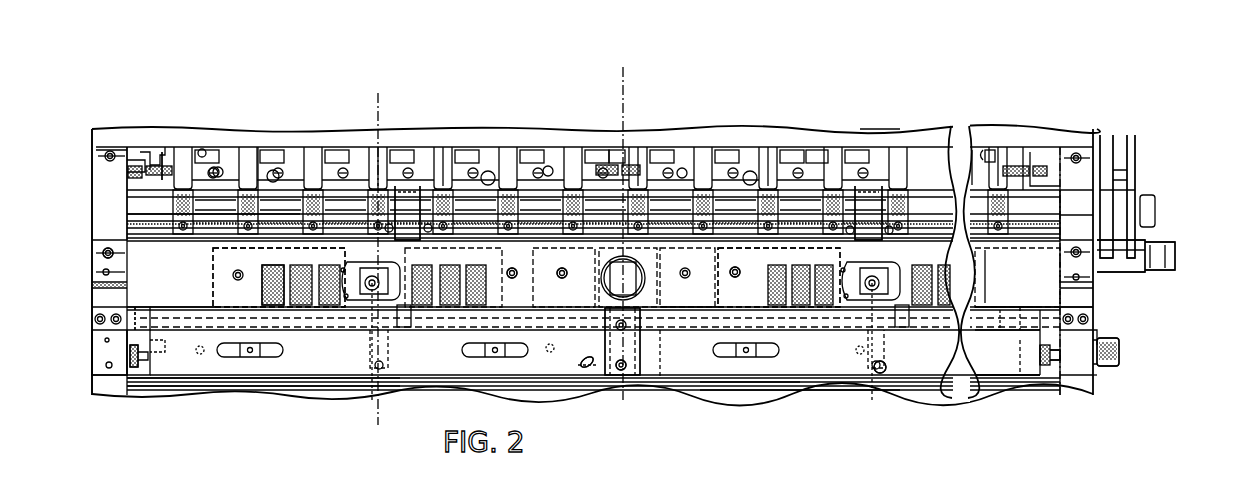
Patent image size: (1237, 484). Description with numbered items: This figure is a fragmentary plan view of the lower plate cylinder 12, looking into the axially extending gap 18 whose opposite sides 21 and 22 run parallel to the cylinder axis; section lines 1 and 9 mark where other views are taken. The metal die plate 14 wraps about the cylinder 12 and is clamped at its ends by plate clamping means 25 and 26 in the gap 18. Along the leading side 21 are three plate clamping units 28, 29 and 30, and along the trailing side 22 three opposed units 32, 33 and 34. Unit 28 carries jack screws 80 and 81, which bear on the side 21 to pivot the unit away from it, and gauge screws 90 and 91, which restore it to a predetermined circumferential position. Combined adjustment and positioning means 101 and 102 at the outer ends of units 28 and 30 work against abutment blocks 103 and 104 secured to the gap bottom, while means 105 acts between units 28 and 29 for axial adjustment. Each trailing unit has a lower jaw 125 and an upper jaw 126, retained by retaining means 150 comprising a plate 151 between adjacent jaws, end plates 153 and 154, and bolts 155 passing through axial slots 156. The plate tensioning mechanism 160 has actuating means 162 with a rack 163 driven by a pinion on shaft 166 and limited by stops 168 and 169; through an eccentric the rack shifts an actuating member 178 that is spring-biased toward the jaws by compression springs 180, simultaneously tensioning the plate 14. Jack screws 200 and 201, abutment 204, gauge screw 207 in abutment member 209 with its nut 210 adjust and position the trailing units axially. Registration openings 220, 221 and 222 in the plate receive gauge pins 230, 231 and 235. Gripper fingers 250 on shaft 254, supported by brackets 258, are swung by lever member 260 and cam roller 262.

The section line 1- 1 is at (378, 93).
The section line 9- 9 is at (623, 68).
The lower plate cylinder 12 is at (869, 136).
The metal die plate 14 is at (164, 168).
The gap 18 is at (146, 254).
The leading side of gap 21 is at (813, 152).
The trailing side of gap 22 is at (207, 382).
The plate clamping means 25 is at (640, 142).
The plate clamping means 26 is at (815, 382).
The plate clamping unit 28 is at (268, 142).
The plate clamping unit 29 is at (773, 142).
The plate clamping unit 30 is at (1000, 145).
The plate clamping unit 32 is at (240, 386).
The plate clamping unit 33 is at (750, 382).
The plate clamping unit 34 is at (1012, 377).
The jack screw 80 is at (273, 174).
The jack screw 81 is at (488, 178).
The gauge screw 90 is at (219, 169).
The gauge screw 91 is at (548, 171).
The adjustment and positioning means 101 is at (140, 150).
The adjustment and positioning means 102 is at (1048, 156).
The abutment block 103 is at (105, 198).
The abutment block 104 is at (1093, 217).
The adjustment and positioning means 105 is at (617, 156).
The lower jaw 125 is at (193, 278).
The upper jaw 126 is at (325, 357).
The retaining means 150 is at (688, 397).
The plate 151 is at (612, 350).
The plate 153 is at (136, 328).
The plate 154 is at (1093, 303).
The bolt 155 is at (630, 362).
The slot 156 is at (585, 368).
The plate tensioning mechanism 160 is at (364, 297).
The actuating means 162 is at (408, 248).
The rack 163 is at (565, 280).
The shaft 166 is at (623, 278).
The stop 168 is at (252, 326).
The stop 169 is at (985, 303).
The actuating member 178 is at (267, 259).
The compression spring 180 is at (500, 278).
The jack screw 200 is at (136, 372).
The jack screw 201 is at (1056, 360).
The abutment 204 is at (94, 356).
The gauge screw 207 is at (1118, 346).
The abutment member 209 is at (1097, 375).
The nut 210 is at (1096, 340).
The opening 220 is at (200, 148).
The opening 221 is at (981, 150).
The opening 222 is at (880, 376).
The gauge pin 230 is at (213, 167).
The gauge pin 231 is at (989, 150).
The gauge pin 235 is at (882, 372).
The gripper finger 250 is at (385, 156).
The shaft 254 is at (137, 212).
The bracket 258 is at (420, 185).
The lever member 260 is at (1135, 180).
The cam roller 262 is at (1175, 260).